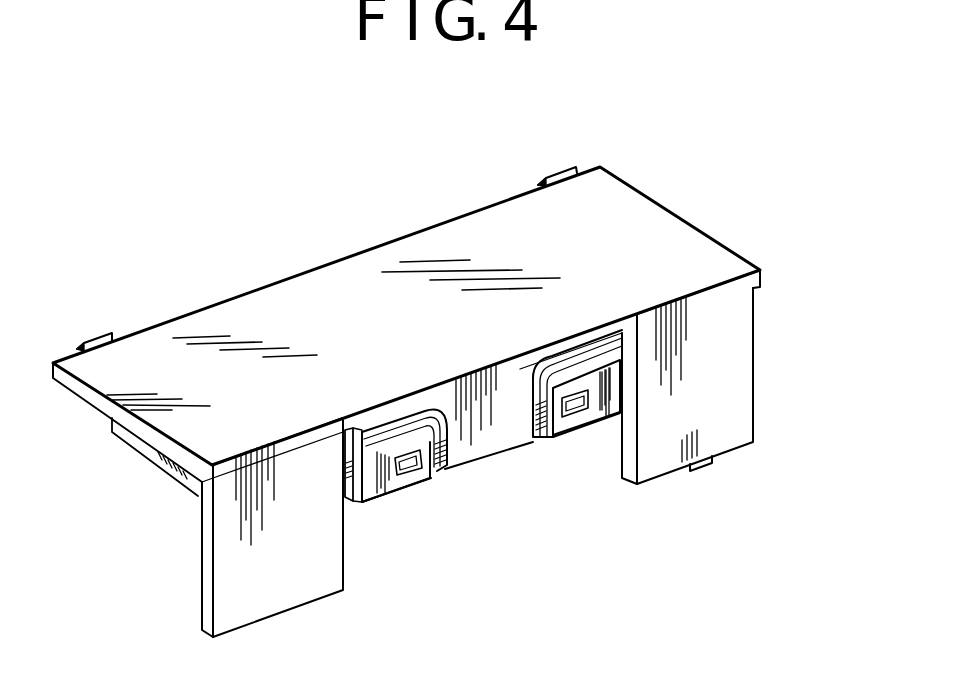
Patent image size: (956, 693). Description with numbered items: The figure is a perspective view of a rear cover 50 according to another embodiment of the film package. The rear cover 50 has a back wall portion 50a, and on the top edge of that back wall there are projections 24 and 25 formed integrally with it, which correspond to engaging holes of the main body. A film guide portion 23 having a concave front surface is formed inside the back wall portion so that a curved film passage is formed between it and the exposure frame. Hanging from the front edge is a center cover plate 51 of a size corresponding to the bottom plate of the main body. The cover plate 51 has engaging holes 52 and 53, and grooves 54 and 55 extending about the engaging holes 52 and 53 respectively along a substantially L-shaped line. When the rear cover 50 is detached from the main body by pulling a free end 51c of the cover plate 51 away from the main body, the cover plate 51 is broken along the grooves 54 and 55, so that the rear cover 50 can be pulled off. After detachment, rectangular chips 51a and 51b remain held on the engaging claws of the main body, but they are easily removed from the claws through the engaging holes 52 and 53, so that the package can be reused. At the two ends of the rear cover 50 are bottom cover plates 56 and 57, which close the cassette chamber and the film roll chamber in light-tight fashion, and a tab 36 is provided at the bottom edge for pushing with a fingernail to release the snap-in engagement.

The rear cover 50 is at (406, 316).
The back wall portion 50a is at (642, 213).
The projection 24 is at (560, 172).
The projection 25 is at (93, 340).
The film guide portion 23 is at (140, 448).
The bottom cover plate 57 is at (227, 523).
The bottom cover plate 56 is at (722, 350).
The tab 36 is at (710, 470).
The center cover plate 51 is at (496, 477).
The rectangular chip 51a is at (343, 495).
The rectangular chip 51b is at (613, 402).
The free end 51c is at (472, 468).
The groove 54 is at (397, 477).
The groove 55 is at (581, 394).
The engaging hole 52 is at (408, 475).
The engaging hole 53 is at (578, 413).